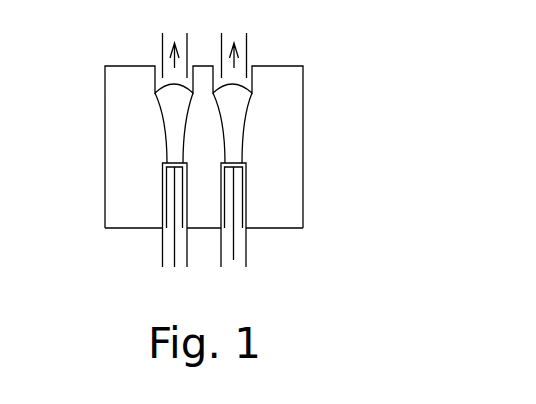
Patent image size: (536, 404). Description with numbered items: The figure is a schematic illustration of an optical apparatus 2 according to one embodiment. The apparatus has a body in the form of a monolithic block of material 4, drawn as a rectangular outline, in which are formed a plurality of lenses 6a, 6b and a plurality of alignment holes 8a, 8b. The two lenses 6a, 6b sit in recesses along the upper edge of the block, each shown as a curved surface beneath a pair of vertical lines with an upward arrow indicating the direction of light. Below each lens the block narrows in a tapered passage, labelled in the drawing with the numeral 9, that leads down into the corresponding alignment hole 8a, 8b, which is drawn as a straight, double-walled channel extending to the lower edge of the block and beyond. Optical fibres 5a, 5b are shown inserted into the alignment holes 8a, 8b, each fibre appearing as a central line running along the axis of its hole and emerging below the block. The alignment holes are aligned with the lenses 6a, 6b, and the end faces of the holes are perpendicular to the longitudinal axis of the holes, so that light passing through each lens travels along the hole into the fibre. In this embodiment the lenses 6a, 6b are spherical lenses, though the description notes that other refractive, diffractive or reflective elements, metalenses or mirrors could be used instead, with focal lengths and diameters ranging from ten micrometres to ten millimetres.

The optical apparatus 2 is at (367, 259).
The monolithic block of material 4 is at (303, 162).
The optical fibre 5a is at (174, 266).
The optical fibre 5b is at (234, 260).
The lens 6a is at (163, 78).
The lens 6b is at (231, 78).
The alignment hole 8a is at (163, 208).
The alignment hole 8b is at (221, 207).
The tapered section 9 is at (160, 110).